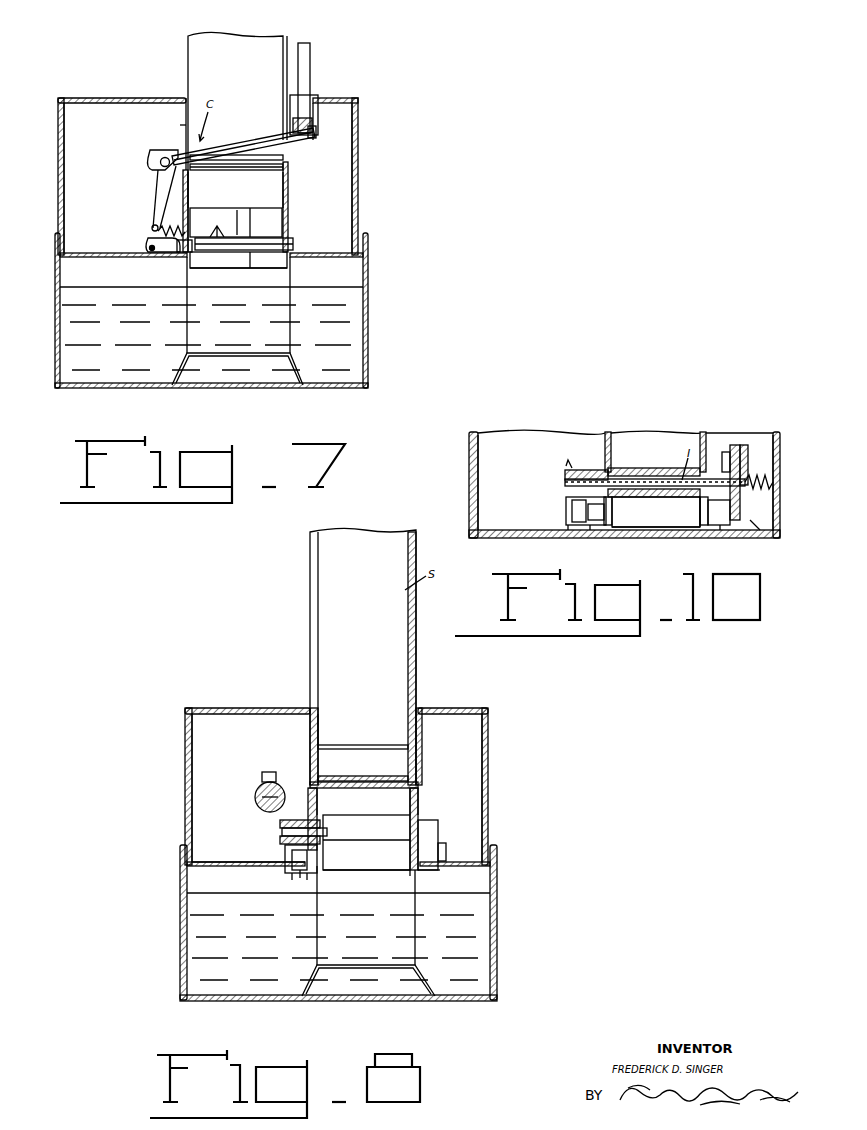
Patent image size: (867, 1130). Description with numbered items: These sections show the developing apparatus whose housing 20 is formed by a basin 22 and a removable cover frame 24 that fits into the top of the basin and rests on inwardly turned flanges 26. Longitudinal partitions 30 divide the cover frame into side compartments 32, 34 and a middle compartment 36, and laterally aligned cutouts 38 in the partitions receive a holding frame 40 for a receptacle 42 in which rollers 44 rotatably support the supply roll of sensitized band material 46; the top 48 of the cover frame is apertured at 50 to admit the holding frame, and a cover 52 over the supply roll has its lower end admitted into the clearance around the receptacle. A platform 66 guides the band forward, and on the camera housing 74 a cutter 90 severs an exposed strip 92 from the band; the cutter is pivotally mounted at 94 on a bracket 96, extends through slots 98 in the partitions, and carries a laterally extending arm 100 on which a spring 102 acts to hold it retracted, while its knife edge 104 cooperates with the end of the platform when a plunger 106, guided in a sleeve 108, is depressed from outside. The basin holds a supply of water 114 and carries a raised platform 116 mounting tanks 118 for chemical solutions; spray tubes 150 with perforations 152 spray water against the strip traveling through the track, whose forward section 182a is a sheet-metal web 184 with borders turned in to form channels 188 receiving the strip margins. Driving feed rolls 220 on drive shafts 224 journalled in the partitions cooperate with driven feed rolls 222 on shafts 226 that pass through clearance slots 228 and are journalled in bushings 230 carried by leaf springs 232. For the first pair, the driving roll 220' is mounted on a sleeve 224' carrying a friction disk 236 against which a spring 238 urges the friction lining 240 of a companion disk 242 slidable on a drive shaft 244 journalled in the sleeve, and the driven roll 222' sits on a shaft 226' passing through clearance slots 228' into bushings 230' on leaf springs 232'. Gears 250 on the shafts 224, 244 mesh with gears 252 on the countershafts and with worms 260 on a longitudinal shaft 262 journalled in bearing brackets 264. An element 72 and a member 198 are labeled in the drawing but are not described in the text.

In FIG. 7, the housing 20 is at (392, 212).
In FIG. 8, the housing 20 is at (188, 698).
In FIG. 7, the basin 22 is at (374, 326).
In FIG. 10, the basin 22 is at (463, 497).
In FIG. 8, the basin 22 is at (505, 928).
In FIG. 7, the cover frame 24 is at (357, 96).
In FIG. 10, the cover frame 24 is at (464, 459).
In FIG. 8, the cover frame 24 is at (496, 743).
In FIG. 7, the inwardly turned flanges 26 is at (75, 253).
In FIG. 8, the inwardly turned flanges 26 is at (200, 864).
In FIG. 7, the longitudinal partitions 30 is at (188, 198).
In FIG. 10, the longitudinal partitions 30 is at (605, 447).
In FIG. 8, the longitudinal partitions 30 is at (310, 799).
In FIG. 7, the side compartment 32 is at (348, 159).
In FIG. 10, the side compartment 32 is at (757, 443).
In FIG. 8, the side compartment 32 is at (476, 783).
In FIG. 7, the side compartment 34 is at (77, 183).
In FIG. 10, the side compartment 34 is at (516, 445).
In FIG. 8, the side compartment 34 is at (204, 770).
In FIG. 7, the middle compartment 36 is at (270, 194).
In FIG. 10, the middle compartment 36 is at (650, 438).
In FIG. 8, the middle compartment 36 is at (415, 798).
In FIG. 8, the cutouts 38 is at (318, 804).
In FIG. 8, the holding frame 40 is at (418, 748).
In FIG. 8, the receptacle 42 is at (318, 757).
In FIG. 8, the rollers 44 is at (378, 752).
In FIG. 8, the sensitized photographic band material 46 is at (338, 780).
In FIG. 7, the top of cover frame 48 is at (100, 98).
In FIG. 8, the top of cover frame 48 is at (236, 708).
In FIG. 8, the aperture 50 is at (300, 708).
In FIG. 8, the cover 52 is at (310, 590).
In FIG. 7, the platform 66 is at (234, 171).
In FIG. 7, the column wall 72 is at (186, 100).
In FIG. 7, the camera housing 74 is at (275, 48).
In FIG. 7, the cutter 90 is at (240, 147).
In FIG. 7, the strip 92 is at (186, 130).
In FIG. 10, the strip 92 is at (699, 498).
In FIG. 7, the pivot 94 is at (160, 165).
In FIG. 7, the bracket 96 is at (157, 152).
In FIG. 7, the slots 98 is at (290, 172).
In FIG. 7, the laterally extending arm 100 is at (155, 196).
In FIG. 7, the spring 102 is at (165, 230).
In FIG. 7, the knife edge 104 is at (284, 160).
In FIG. 7, the plunger 106 is at (310, 73).
In FIG. 7, the sleeve 108 is at (313, 118).
In FIG. 7, the water supply 114 is at (110, 290).
In FIG. 8, the water supply 114 is at (210, 905).
In FIG. 7, the raised platform 116 is at (296, 372).
In FIG. 8, the raised platform 116 is at (305, 990).
In FIG. 7, the tanks 118 is at (272, 280).
In FIG. 8, the tanks 118 is at (316, 925).
In FIG. 7, the spray tubes 150 is at (293, 243).
In FIG. 7, the perforations 152 is at (220, 233).
In FIG. 7, the forward track section 182a is at (241, 230).
In FIG. 7, the web 184 is at (255, 235).
In FIG. 7, the channels 188 is at (260, 248).
In FIG. 7, the lower member 198 is at (210, 248).
In FIG. 7, the driving feed rolls 220 is at (270, 215).
In FIG. 8, the driving feed rolls 220 is at (366, 832).
In FIG. 7, the driven feed rolls 222 is at (238, 272).
In FIG. 8, the driven feed rolls 222 is at (366, 873).
In FIG. 8, the drive shafts 224 is at (318, 832).
In FIG. 8, the shafts 226 is at (403, 874).
In FIG. 8, the clearance slots 228 is at (374, 866).
In FIG. 8, the bushings 230 is at (374, 852).
In FIG. 8, the leaf springs 232 is at (370, 890).
In FIG. 10, the friction disk 236 is at (728, 460).
In FIG. 10, the spring 238 is at (759, 490).
In FIG. 10, the friction lining 240 is at (732, 447).
In FIG. 10, the companion disk 242 is at (744, 445).
In FIG. 10, the drive shaft 244 is at (636, 527).
In FIG. 10, the gears 250 is at (566, 473).
In FIG. 8, the gears 250 is at (280, 838).
In FIG. 10, the gears 252 is at (566, 505).
In FIG. 8, the gears 252 is at (285, 856).
In FIG. 8, the worms 260 is at (260, 786).
In FIG. 8, the longitudinal shaft 262 is at (255, 800).
In FIG. 8, the bearing brackets 264 is at (271, 772).
In FIG. 10, the driving roll 220' is at (654, 460).
In FIG. 10, the driven roll 222' is at (656, 541).
In FIG. 10, the sleeve 224' is at (655, 465).
In FIG. 10, the shaft 226' is at (694, 532).
In FIG. 10, the clearance slots 228' is at (672, 526).
In FIG. 10, the bushings 230' is at (659, 528).
In FIG. 10, the leaf springs 232' is at (682, 544).